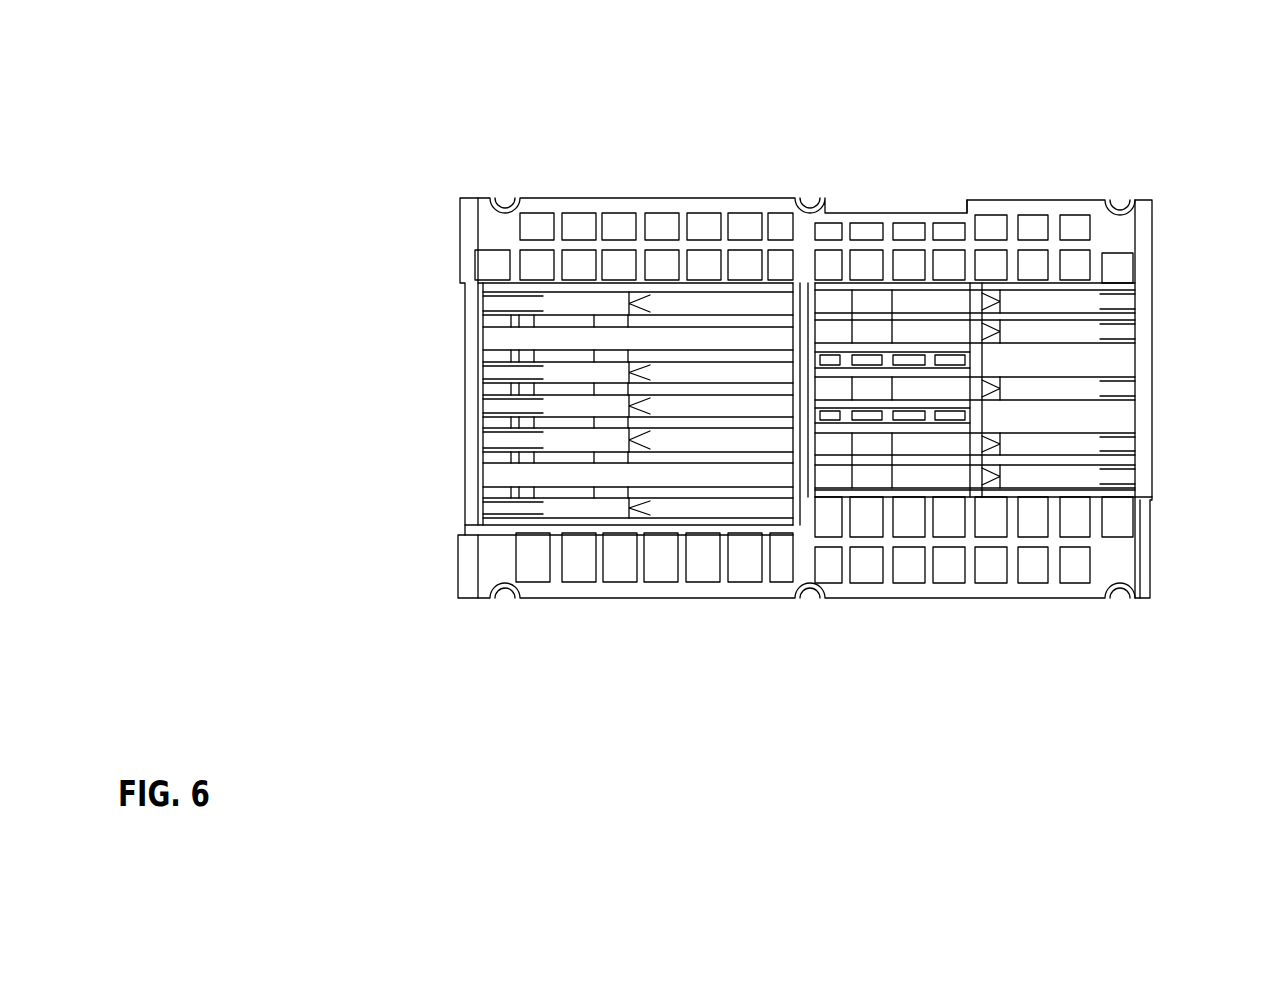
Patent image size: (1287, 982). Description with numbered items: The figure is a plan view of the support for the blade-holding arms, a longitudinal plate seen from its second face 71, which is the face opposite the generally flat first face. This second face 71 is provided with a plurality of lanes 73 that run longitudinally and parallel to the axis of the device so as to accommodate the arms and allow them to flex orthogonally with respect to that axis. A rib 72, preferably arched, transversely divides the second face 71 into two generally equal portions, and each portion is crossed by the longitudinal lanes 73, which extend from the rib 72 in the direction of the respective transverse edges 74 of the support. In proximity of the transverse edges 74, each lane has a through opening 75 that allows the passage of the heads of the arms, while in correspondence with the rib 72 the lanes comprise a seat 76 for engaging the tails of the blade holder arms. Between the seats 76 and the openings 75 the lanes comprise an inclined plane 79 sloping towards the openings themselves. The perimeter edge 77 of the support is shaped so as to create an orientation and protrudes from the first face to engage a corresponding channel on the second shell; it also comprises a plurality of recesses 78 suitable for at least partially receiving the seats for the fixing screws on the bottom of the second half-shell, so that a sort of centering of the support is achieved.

The second face 71 is at (880, 300).
The rib 72 is at (800, 530).
The lanes 73 is at (675, 350).
The transverse edges 74 is at (460, 232).
The through opening 75 is at (543, 507).
The seat 76 is at (782, 380).
The perimeter edge 77 is at (979, 195).
The recesses 78 is at (513, 205).
The inclined plane 79 is at (750, 420).